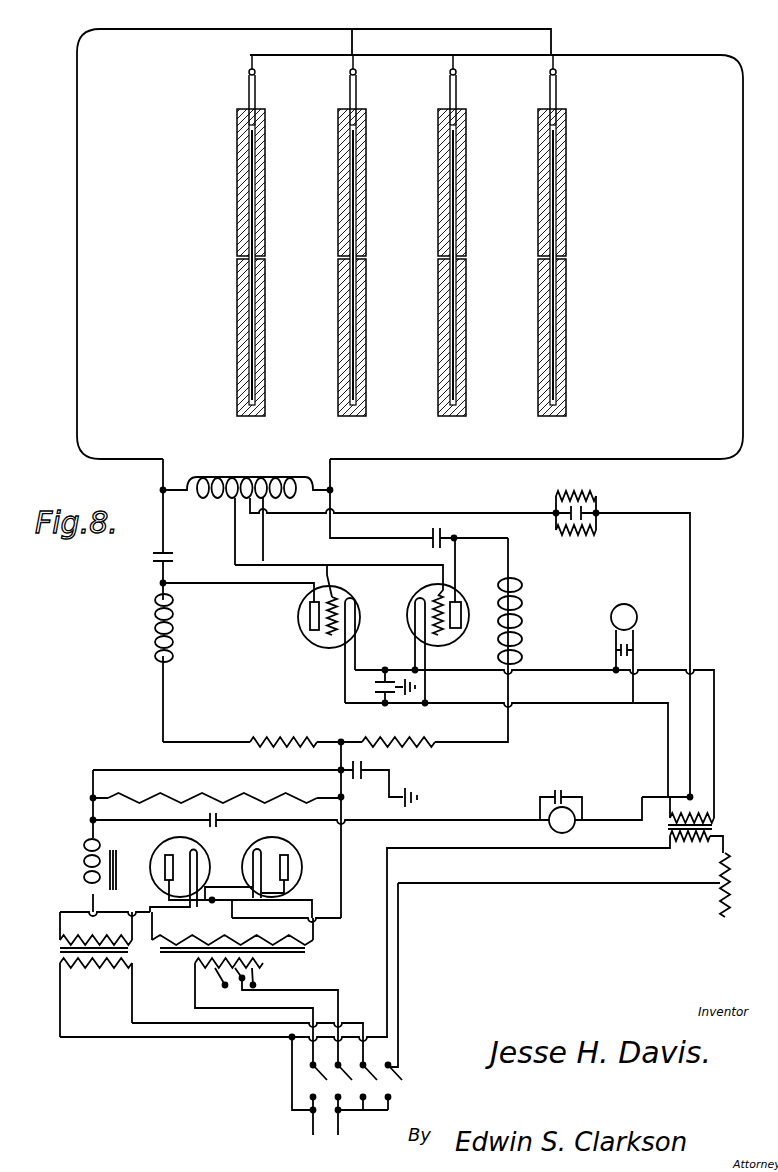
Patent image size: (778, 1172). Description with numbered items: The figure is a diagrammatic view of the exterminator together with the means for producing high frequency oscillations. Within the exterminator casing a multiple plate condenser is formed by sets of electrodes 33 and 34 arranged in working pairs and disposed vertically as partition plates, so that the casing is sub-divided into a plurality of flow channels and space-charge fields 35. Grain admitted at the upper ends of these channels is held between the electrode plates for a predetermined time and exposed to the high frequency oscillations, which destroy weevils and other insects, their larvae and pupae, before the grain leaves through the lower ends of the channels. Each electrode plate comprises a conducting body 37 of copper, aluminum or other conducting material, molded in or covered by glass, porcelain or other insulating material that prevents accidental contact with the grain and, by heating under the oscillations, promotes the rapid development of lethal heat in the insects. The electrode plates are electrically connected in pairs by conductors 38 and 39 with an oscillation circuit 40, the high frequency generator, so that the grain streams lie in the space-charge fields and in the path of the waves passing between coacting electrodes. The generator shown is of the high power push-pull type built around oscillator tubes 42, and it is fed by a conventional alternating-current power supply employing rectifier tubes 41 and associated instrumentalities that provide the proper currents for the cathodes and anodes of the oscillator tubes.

The electrodes 33 is at (237, 136).
The electrodes 34 is at (338, 141).
The flow channels and space-charge fields 35 is at (401, 205).
The conducting body 37 is at (554, 181).
The conductor 38 is at (613, 55).
The conductor 39 is at (206, 32).
The oscillation circuit 40 is at (133, 667).
The rectifier tubes 41 is at (247, 866).
The oscillator tubes 42 is at (407, 609).